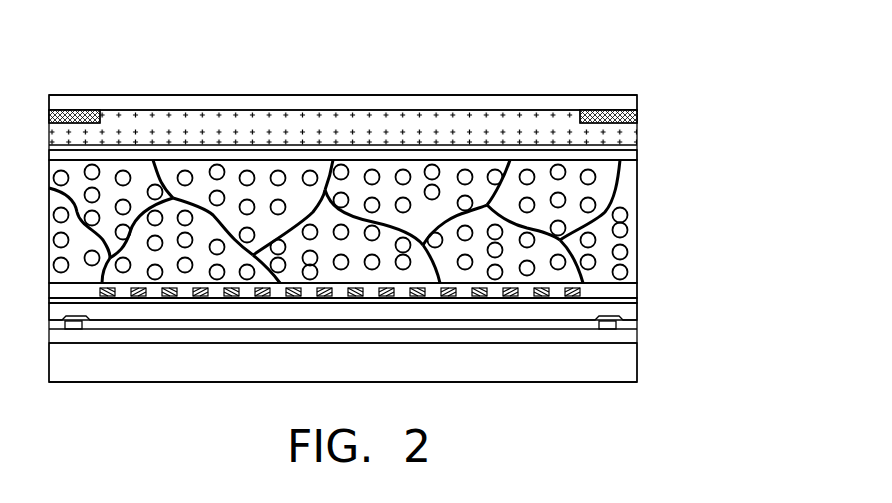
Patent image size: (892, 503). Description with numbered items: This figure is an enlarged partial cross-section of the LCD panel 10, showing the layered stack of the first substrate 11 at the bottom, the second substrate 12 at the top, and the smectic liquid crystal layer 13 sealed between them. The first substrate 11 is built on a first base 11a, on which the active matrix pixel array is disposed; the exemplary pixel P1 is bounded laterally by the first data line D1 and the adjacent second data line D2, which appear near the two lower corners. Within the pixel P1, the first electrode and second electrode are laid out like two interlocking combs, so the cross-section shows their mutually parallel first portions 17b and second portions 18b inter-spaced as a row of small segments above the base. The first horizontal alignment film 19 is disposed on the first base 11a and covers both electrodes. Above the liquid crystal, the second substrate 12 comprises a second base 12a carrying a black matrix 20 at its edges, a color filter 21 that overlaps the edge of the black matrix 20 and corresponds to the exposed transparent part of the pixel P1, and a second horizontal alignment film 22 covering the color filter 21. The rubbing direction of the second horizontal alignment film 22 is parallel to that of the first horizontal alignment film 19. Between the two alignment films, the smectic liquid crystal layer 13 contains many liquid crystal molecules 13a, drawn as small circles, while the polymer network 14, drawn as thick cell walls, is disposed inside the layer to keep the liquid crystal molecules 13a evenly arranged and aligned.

The LCD panel 10 is at (791, 30).
The second substrate 12 is at (426, 119).
The second base 12a is at (627, 100).
The black matrix 20 is at (635, 117).
The color filter 21 is at (627, 133).
The second horizontal alignment film 22 is at (395, 157).
The smectic liquid crystal layer 13 is at (400, 221).
The liquid crystal molecules 13a is at (565, 200).
The polymer network 14 is at (625, 252).
The first horizontal alignment film 19 is at (627, 288).
The second portions 18b is at (583, 296).
The first portions 17b is at (520, 301).
The first substrate 11 is at (433, 361).
The first base 11a is at (627, 360).
The first data line D1 is at (73, 329).
The second data line D2 is at (607, 329).
The pixel P1 is at (217, 302).